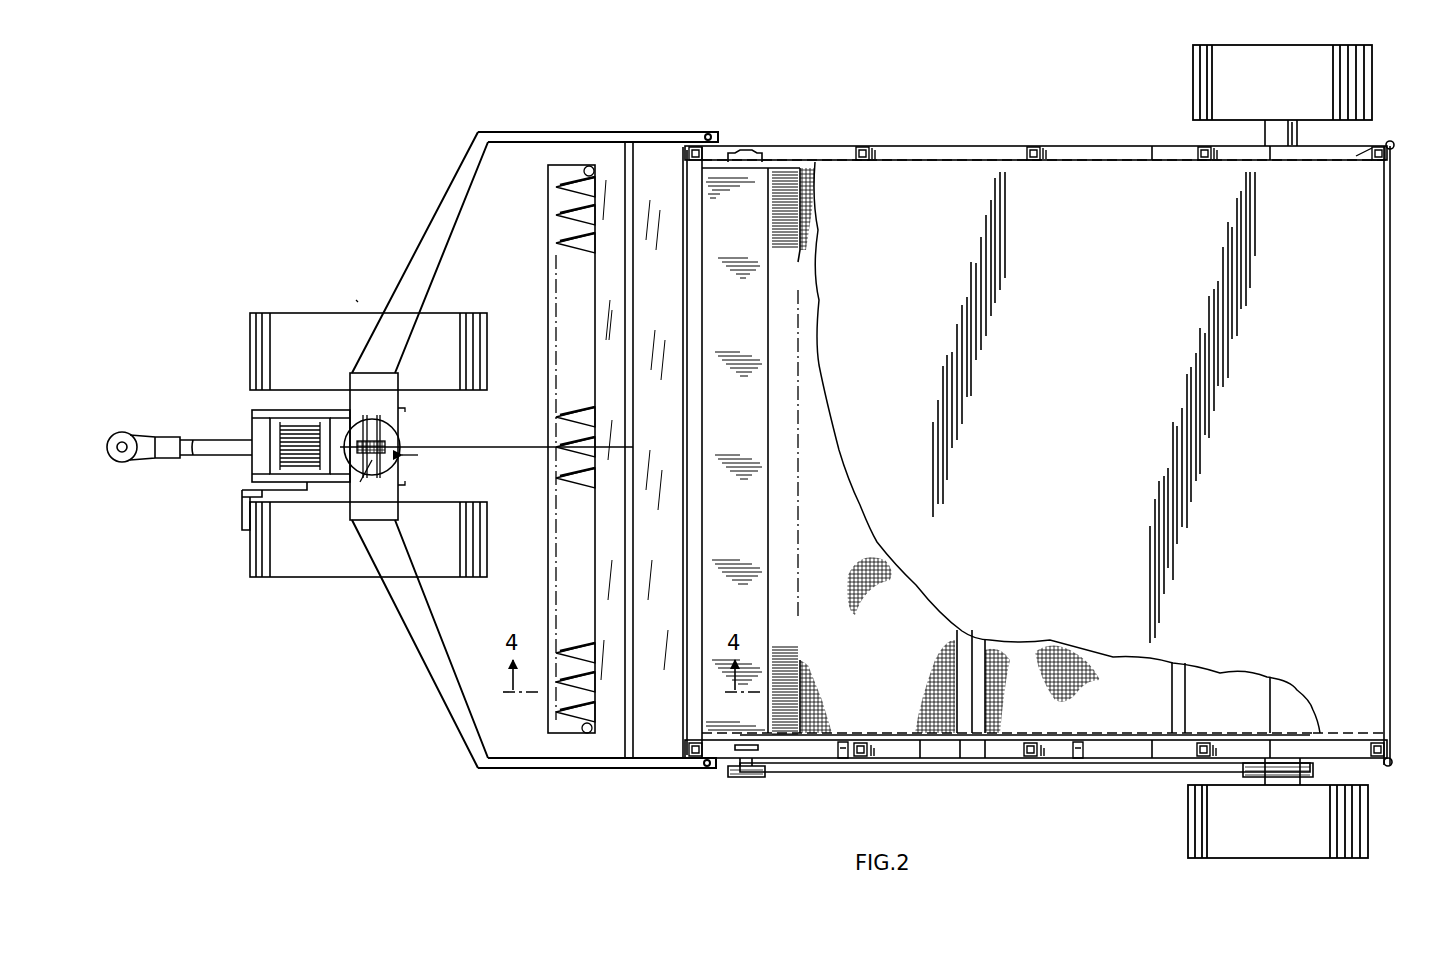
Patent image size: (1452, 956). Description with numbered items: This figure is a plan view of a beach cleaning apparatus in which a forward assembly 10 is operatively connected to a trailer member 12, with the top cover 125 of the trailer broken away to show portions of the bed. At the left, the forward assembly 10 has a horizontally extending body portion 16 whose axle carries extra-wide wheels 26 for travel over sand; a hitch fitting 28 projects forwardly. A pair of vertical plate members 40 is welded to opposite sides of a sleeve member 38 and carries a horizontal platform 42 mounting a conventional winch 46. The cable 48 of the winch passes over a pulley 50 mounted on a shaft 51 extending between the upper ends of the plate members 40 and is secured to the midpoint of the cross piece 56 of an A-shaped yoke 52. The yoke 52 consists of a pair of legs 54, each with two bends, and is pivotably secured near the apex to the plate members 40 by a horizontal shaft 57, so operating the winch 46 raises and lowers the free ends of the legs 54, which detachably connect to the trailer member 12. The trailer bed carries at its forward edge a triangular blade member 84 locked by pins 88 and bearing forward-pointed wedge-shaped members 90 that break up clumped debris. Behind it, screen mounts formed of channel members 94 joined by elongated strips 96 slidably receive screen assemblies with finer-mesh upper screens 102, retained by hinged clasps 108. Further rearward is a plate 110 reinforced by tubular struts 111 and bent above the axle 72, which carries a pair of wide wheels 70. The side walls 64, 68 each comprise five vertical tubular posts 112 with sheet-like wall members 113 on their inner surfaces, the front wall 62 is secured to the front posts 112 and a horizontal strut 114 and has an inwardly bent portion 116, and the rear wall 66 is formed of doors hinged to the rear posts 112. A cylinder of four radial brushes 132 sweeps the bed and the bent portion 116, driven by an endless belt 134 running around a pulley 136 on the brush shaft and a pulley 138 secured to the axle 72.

The forward assembly 10 is at (378, 292).
The trailer member 12 is at (983, 146).
The body portion 16 is at (430, 459).
The wheels 26 is at (250, 333).
The hitch 28 is at (172, 463).
The sleeve member 38 is at (357, 408).
The vertical plate members 40 is at (399, 409).
The horizontal platform 42 is at (252, 416).
The winch 46 is at (278, 470).
The cable 48 is at (505, 447).
The pulley 50 is at (382, 440).
The shaft 51 is at (362, 470).
The A-shaped yoke 52 is at (425, 222).
The legs 54 is at (586, 133).
The cross piece 56 is at (633, 265).
The horizontal shaft 57 is at (382, 460).
The front wall 62 is at (681, 372).
The side wall 64 is at (816, 742).
The rear wall 66 is at (1392, 332).
The side wall 68 is at (1115, 158).
The wheels 70 is at (1372, 85).
The axle 72 is at (1300, 134).
The blade member 84 is at (546, 270).
The pins 88 is at (592, 168).
The wedge-shaped members 90 is at (562, 245).
The channel members 94 is at (960, 687).
The elongated strips 96 is at (998, 758).
The upper screens 102 is at (973, 645).
The hinged clasps 108 is at (1078, 760).
The plate 110 is at (1227, 692).
The reinforcing struts 111 is at (1356, 150).
The vertical tubular posts 112 is at (697, 146).
The wall members 113 is at (922, 758).
The horizontal strut 114 is at (712, 310).
The inwardly bent portion 116 is at (761, 455).
The top cover 125 is at (1067, 447).
The brushes 132 is at (812, 245).
The endless belt 134 is at (898, 772).
The pulley 136 is at (748, 777).
The pulley 138 is at (1313, 772).